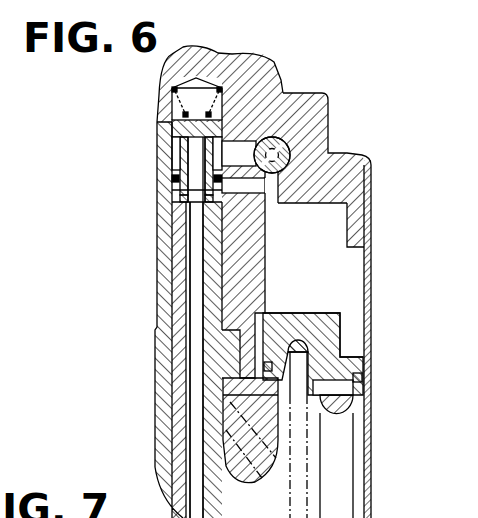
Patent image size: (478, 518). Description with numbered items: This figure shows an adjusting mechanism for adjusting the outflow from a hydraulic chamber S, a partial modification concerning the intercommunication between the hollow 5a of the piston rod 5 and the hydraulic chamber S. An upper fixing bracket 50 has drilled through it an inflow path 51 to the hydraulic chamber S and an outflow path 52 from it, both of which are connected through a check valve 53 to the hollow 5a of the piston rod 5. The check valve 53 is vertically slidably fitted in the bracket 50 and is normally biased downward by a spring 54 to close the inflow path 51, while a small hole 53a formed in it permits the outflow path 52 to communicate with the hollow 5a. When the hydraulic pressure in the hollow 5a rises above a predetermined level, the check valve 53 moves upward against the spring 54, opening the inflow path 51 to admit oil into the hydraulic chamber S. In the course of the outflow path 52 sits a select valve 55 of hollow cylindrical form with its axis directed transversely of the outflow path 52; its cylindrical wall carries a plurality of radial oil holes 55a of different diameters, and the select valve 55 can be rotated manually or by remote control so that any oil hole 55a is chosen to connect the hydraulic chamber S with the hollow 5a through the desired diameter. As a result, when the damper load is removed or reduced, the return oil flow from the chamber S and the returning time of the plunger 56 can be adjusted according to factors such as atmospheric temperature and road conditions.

The upper fixing bracket 50 is at (323, 142).
The inflow path 51 is at (257, 193).
The outflow path 52 is at (238, 150).
The check valve 53 is at (172, 119).
The small hole 53a is at (175, 150).
The spring 54 is at (172, 90).
The select valve 55 is at (327, 105).
The radial oil holes 55a is at (280, 142).
The plunger 56 is at (343, 370).
The hydraulic chamber S is at (332, 270).
The piston rod 5 is at (177, 455).
The hollow 5a is at (195, 407).